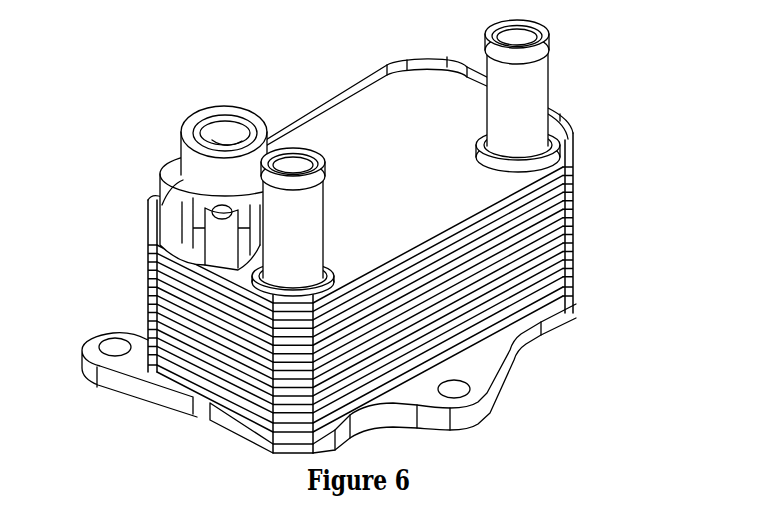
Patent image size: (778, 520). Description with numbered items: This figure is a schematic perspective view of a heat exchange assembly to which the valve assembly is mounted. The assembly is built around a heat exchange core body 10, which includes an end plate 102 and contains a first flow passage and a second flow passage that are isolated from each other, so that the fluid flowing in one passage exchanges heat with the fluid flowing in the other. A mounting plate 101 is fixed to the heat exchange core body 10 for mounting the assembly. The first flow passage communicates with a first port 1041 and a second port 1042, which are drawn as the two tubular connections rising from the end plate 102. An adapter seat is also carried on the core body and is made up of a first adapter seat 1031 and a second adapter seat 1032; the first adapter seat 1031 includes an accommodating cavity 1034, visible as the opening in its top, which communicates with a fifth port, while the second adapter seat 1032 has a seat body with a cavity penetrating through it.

The heat exchange core body 10 is at (160, 310).
The mounting plate 101 is at (118, 380).
The end plate 102 is at (425, 102).
The first adapter seat 1031 is at (167, 167).
The second adapter seat 1032 is at (170, 228).
The accommodating cavity 1034 is at (217, 143).
The first port 1041 is at (523, 104).
The second port 1042 is at (299, 248).